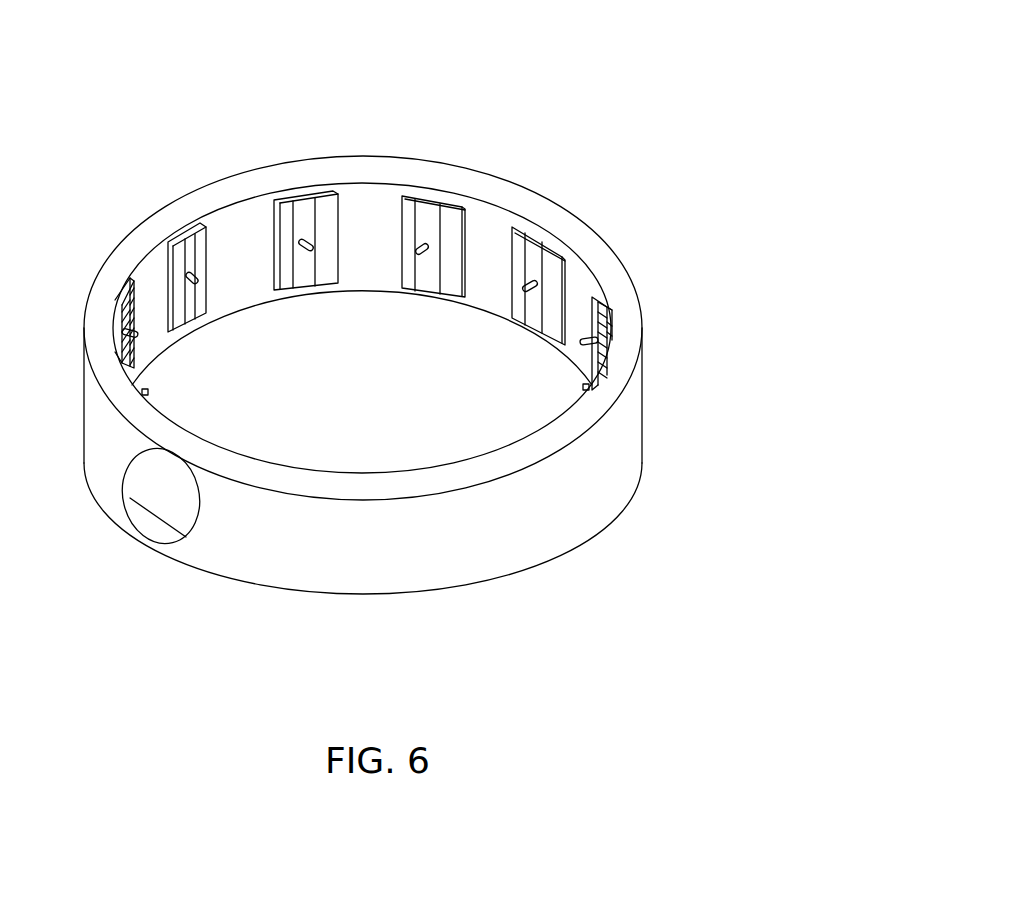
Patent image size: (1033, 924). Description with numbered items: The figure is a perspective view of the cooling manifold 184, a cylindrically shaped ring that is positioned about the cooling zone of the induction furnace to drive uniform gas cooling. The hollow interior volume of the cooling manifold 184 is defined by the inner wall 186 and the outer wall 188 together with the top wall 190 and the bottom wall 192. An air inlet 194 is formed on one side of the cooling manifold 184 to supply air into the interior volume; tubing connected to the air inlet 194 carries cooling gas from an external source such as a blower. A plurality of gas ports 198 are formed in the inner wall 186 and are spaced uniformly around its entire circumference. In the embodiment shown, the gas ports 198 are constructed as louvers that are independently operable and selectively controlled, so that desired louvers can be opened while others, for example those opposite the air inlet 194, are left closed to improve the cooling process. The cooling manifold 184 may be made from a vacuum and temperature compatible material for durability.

The cooling manifold 184 is at (588, 83).
The inner wall 186 is at (486, 313).
The outer wall 188 is at (641, 397).
The top wall 190 is at (437, 173).
The bottom wall 192 is at (407, 597).
The air inlet 194 is at (152, 520).
The gas ports 198 is at (189, 224).